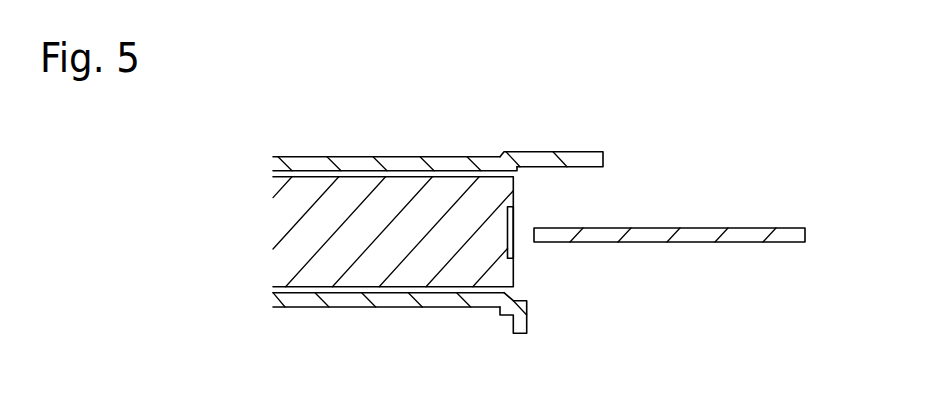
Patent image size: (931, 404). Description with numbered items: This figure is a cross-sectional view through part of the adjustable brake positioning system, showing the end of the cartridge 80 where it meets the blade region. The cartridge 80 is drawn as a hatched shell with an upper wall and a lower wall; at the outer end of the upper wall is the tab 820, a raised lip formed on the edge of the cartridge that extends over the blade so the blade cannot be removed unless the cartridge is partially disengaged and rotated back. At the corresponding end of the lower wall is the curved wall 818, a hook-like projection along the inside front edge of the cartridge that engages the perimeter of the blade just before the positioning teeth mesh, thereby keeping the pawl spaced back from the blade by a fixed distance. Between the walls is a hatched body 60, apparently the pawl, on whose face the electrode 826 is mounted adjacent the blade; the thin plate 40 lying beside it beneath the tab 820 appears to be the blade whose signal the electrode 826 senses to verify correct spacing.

The plate 40 is at (697, 242).
The body 60 is at (515, 185).
The cartridge 80 is at (385, 157).
The curved wall 818 is at (528, 330).
The tab 820 is at (582, 152).
The electrode 826 is at (513, 242).